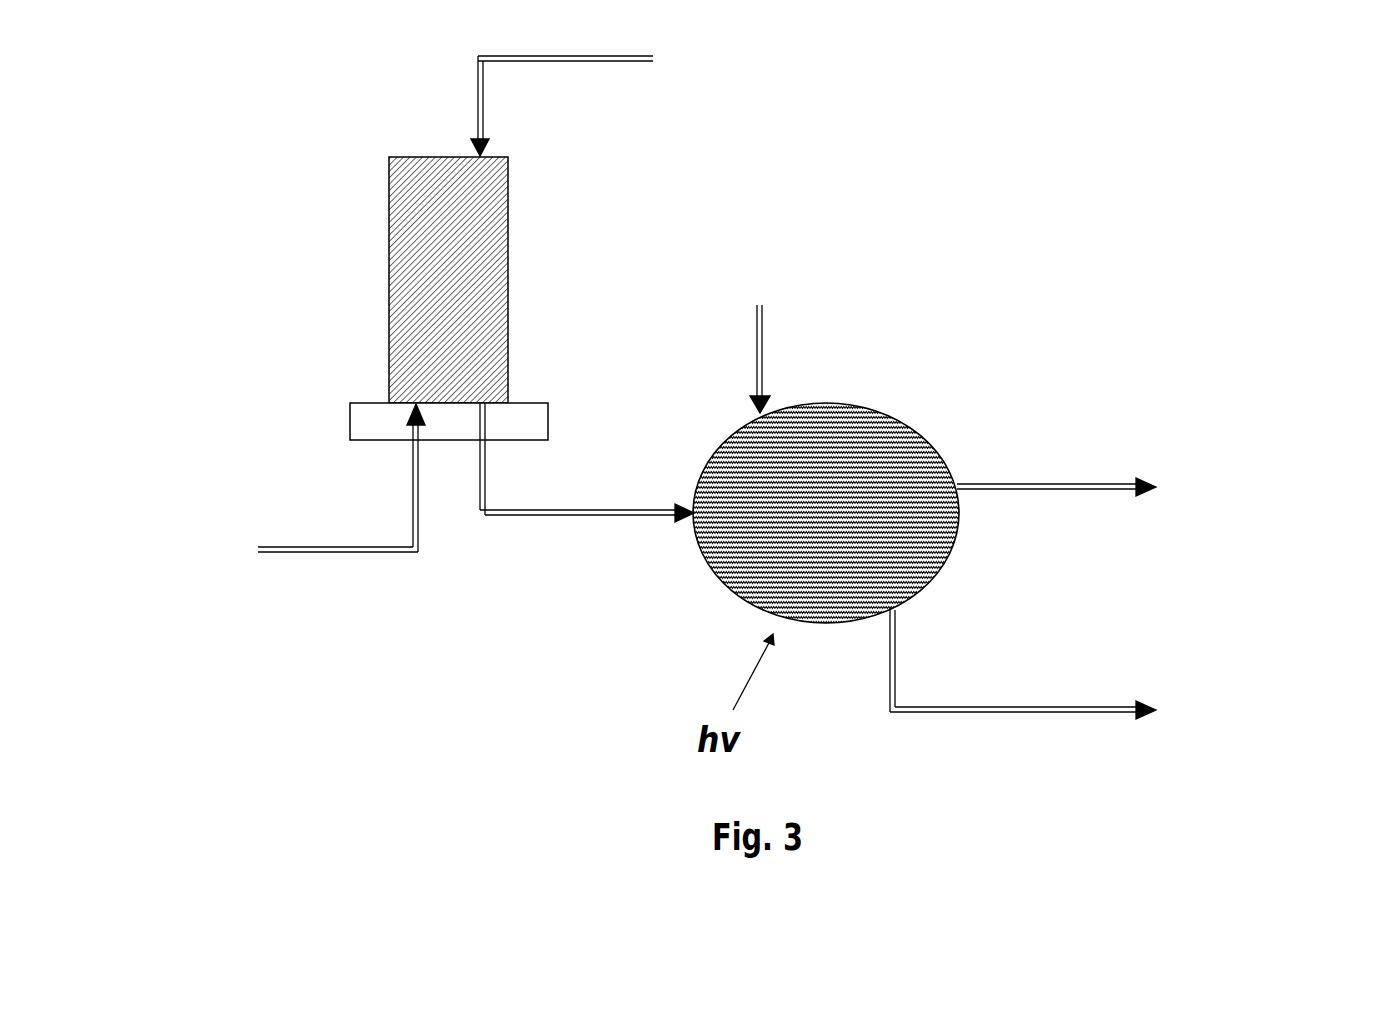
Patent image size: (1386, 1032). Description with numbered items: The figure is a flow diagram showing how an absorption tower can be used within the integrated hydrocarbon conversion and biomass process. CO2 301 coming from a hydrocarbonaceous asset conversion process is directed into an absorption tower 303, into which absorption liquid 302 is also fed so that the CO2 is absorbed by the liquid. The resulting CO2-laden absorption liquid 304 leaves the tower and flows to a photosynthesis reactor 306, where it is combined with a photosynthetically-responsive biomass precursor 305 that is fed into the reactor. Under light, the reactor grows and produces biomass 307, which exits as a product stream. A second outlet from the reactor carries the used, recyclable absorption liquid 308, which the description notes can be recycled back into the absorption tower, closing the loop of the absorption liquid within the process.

The CO2 301 is at (284, 516).
The absorption liquid 302 is at (699, 100).
The absorption tower 303 is at (388, 255).
The CO2-laden absorption liquid 304 is at (583, 526).
The photosynthetically-responsive biomass precursor 305 is at (804, 309).
The photosynthesis reactor 306 is at (907, 423).
The biomass 307 is at (1146, 502).
The recyclable absorption liquid 308 is at (1128, 696).